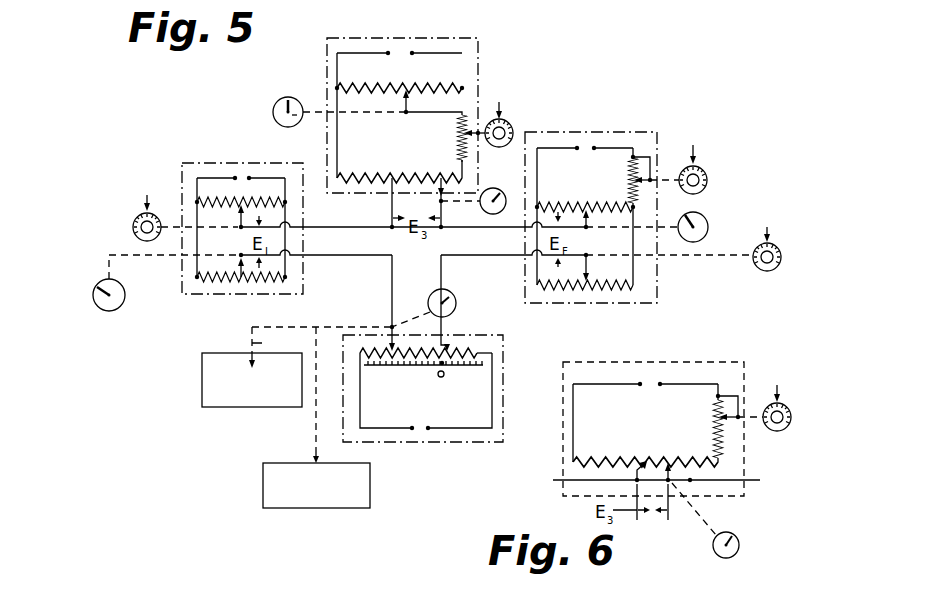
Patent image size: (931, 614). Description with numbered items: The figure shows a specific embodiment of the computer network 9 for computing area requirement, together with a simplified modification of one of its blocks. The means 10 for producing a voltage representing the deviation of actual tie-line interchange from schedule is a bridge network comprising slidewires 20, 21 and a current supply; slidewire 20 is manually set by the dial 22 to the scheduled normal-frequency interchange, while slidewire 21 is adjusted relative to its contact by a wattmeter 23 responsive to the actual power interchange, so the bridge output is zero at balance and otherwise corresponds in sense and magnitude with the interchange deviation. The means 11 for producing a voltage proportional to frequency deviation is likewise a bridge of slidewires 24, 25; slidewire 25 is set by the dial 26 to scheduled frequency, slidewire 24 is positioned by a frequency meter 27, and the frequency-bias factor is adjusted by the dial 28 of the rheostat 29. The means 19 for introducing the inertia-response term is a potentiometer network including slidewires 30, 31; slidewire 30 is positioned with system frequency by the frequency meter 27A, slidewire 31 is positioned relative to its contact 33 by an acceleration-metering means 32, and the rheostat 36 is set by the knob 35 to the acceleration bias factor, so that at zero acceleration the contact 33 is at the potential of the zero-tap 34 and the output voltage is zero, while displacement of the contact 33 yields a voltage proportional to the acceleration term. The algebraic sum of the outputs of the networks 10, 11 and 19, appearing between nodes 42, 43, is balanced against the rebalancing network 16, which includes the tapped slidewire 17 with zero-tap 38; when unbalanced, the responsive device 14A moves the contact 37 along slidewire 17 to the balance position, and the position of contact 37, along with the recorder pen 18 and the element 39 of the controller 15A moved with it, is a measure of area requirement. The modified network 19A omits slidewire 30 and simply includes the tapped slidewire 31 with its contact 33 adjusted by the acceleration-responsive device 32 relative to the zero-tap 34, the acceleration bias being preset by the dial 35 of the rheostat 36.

In FIG. 5, the computer network 9 is at (350, 290).
In FIG. 5, the means for producing voltage E_I 10 is at (203, 162).
In FIG. 5, the means for producing voltage E_F 11 is at (603, 130).
In FIG. 5, the responsive device 14A is at (452, 295).
In FIG. 5, the controller 15A is at (243, 398).
In FIG. 5, the rebalancing network 16 is at (503, 408).
In FIG. 5, the tapped slidewire 17 is at (475, 350).
In FIG. 5, the recorder pen 18 is at (316, 452).
In FIG. 5, the means for introducing inertia-response term 19 is at (387, 38).
In FIG. 6, the network for introducing voltage E_3 19A is at (683, 360).
In FIG. 5, the slidewire 20 is at (274, 202).
In FIG. 5, the slidewire 21 is at (258, 282).
In FIG. 5, the dial 22 is at (132, 228).
In FIG. 5, the wattmeter 23 is at (125, 298).
In FIG. 5, the slidewire 24 is at (607, 198).
In FIG. 5, the slidewire 25 is at (605, 288).
In FIG. 5, the dial 26 is at (775, 252).
In FIG. 5, the frequency meter 27 is at (697, 237).
In FIG. 5, the frequency meter 27A is at (275, 119).
In FIG. 5, the dial 28 is at (708, 185).
In FIG. 5, the rheostat 29 is at (633, 185).
In FIG. 5, the slidewire 30 is at (395, 87).
In FIG. 5, the slidewire 31 is at (370, 176).
In FIG. 6, the slidewire 31 is at (592, 453).
In FIG. 5, the acceleration-metering means 32 is at (486, 187).
In FIG. 6, the acceleration-metering means 32 is at (738, 545).
In FIG. 5, the contact 33 is at (438, 203).
In FIG. 6, the contact 33 is at (672, 473).
In FIG. 5, the zero-tap 34 is at (391, 185).
In FIG. 6, the zero-tap 34 is at (636, 468).
In FIG. 5, the knob 35 is at (510, 119).
In FIG. 6, the knob 35 is at (784, 428).
In FIG. 5, the rheostat 36 is at (457, 137).
In FIG. 6, the rheostat 36 is at (718, 411).
In FIG. 5, the contact 37 is at (388, 327).
In FIG. 5, the zero-tap 38 is at (448, 343).
In FIG. 5, the element 39 is at (267, 347).
In FIG. 5, the node 42 is at (389, 229).
In FIG. 6, the node 42 is at (639, 468).
In FIG. 5, the node 43 is at (442, 228).
In FIG. 6, the node 43 is at (670, 482).